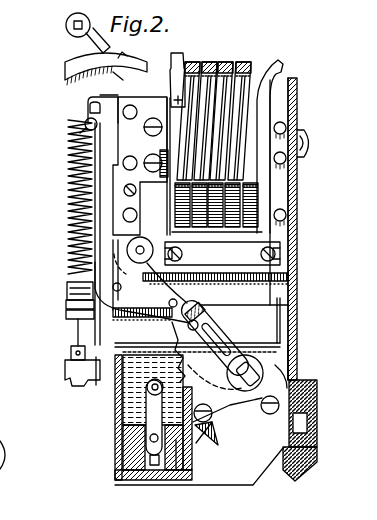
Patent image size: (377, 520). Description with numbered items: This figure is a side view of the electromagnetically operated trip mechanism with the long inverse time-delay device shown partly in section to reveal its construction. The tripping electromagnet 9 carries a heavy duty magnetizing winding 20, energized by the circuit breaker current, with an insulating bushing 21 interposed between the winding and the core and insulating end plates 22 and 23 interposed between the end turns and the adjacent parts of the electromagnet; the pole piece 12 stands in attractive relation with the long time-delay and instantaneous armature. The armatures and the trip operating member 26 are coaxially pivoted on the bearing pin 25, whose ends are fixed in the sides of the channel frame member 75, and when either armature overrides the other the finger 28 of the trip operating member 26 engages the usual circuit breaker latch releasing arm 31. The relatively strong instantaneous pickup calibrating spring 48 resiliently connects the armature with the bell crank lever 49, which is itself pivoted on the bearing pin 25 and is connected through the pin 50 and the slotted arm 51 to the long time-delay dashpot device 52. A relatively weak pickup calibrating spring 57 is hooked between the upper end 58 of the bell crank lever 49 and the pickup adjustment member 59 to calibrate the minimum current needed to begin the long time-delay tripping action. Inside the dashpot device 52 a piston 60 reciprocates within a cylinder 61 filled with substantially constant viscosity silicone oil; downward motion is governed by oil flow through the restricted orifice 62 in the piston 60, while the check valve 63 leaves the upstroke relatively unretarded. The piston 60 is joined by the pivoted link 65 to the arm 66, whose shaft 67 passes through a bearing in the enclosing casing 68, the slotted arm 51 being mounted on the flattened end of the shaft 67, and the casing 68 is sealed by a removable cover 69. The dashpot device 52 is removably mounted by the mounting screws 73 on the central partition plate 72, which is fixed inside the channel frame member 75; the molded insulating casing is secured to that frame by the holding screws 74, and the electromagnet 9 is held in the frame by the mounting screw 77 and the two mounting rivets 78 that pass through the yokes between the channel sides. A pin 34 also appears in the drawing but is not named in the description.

The tripping electromagnet 9 is at (327, 111).
The pole piece 12 is at (147, 147).
The magnetizing winding 20 is at (243, 62).
The insulating bushing 21 is at (168, 97).
The insulating end plate 22 is at (118, 96).
The insulating end plate 23 is at (270, 95).
The bearing pin 25 is at (136, 250).
The trip operating member 26 is at (121, 63).
The finger 28 is at (72, 68).
The latch releasing arm 31 is at (90, 38).
The pin 34 is at (90, 102).
The instantaneous pickup calibrating spring 48 is at (70, 217).
The bell crank lever 49 is at (150, 298).
The pin 50 is at (179, 320).
The slotted arm 51 is at (232, 340).
The long time-delay dashpot device 52 is at (118, 430).
The pickup calibrating spring 57 is at (72, 270).
The upper end of bell crank lever 58 is at (84, 122).
The pickup adjustment member 59 is at (80, 380).
The piston 60 is at (128, 448).
The cylinder 61 is at (118, 464).
The restricted orifice 62 is at (160, 470).
The check valve 63 is at (163, 460).
The pivoted link 65 is at (153, 415).
The arm 66 is at (176, 362).
The shaft 67 is at (248, 370).
The enclosing casing 68 is at (118, 395).
The removable cover 69 is at (276, 343).
The central partition plate 72 is at (223, 487).
The mounting screws 73 is at (267, 412).
The holding screws 74 is at (318, 385).
The channel frame member 75 is at (298, 278).
The mounting screw 77 is at (307, 153).
The mounting rivets 78 is at (260, 254).